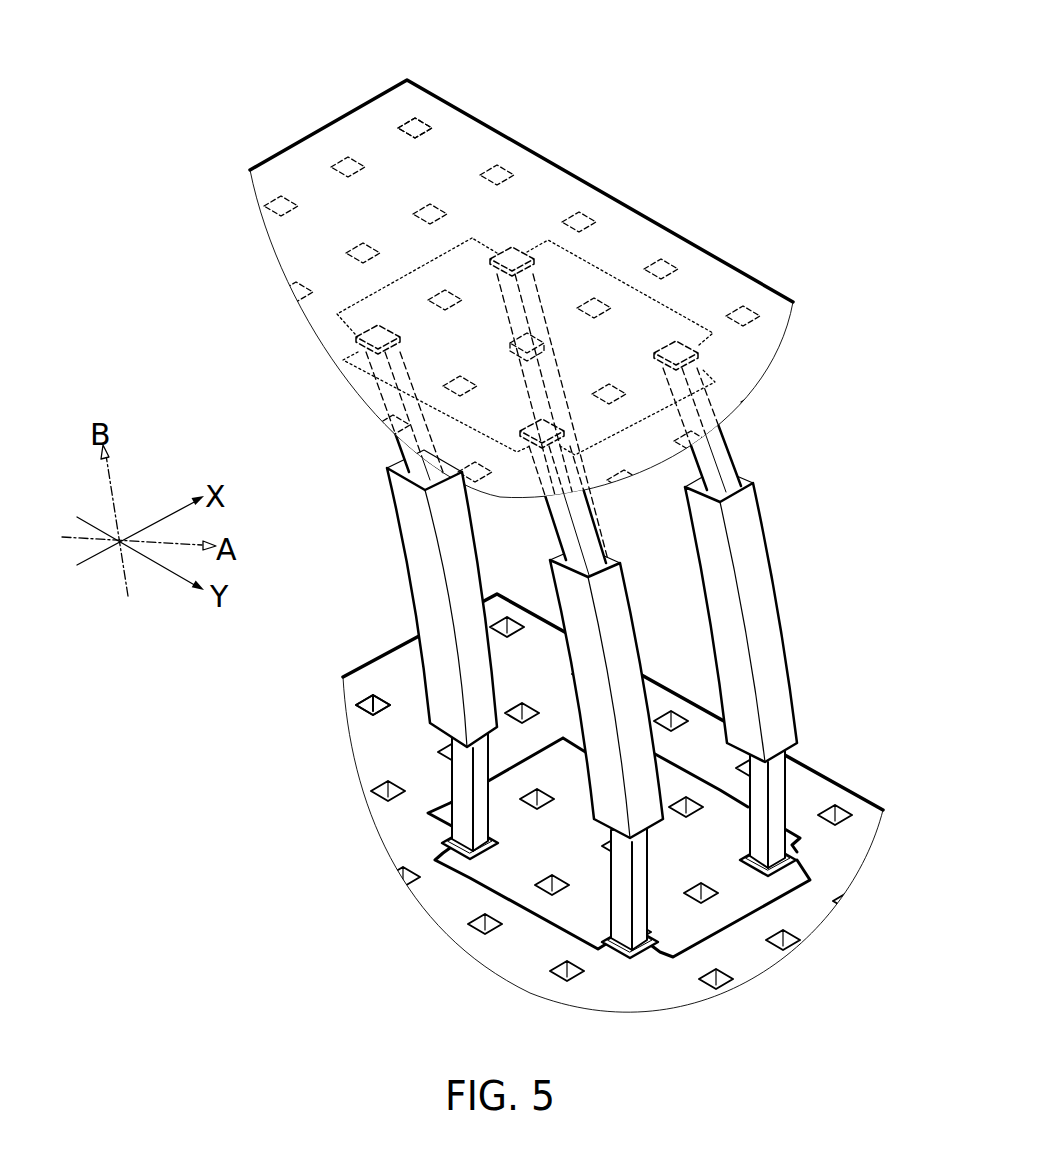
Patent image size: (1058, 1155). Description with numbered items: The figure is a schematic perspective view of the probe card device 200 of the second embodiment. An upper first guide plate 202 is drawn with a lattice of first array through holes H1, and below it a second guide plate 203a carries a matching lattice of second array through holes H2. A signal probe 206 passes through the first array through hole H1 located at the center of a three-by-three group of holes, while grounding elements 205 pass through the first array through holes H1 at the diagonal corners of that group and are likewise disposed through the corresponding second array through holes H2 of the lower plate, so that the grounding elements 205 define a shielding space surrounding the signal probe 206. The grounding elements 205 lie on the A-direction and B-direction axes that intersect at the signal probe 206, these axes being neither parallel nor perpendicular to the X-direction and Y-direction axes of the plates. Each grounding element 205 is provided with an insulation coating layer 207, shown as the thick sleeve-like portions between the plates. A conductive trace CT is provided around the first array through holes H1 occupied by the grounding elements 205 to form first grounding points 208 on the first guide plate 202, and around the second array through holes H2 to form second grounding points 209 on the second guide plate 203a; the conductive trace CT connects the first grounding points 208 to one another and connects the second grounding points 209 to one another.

The probe card device 200 is at (681, 76).
The first guide plate 202 is at (547, 188).
The lower guide plate 203a is at (820, 787).
The grounding element 205 is at (547, 318).
The signal probe 206 is at (523, 390).
The insulation coating layer 207 is at (458, 545).
The first grounding point 208 is at (497, 247).
The second grounding point 209 is at (447, 843).
The first array through hole H1 is at (412, 120).
The second array through hole H2 is at (378, 700).
The conductive trace CT is at (419, 262).